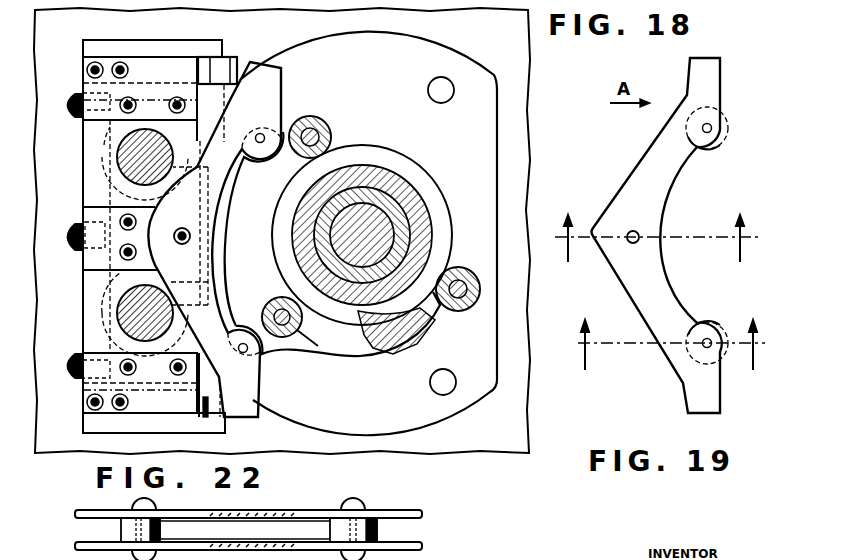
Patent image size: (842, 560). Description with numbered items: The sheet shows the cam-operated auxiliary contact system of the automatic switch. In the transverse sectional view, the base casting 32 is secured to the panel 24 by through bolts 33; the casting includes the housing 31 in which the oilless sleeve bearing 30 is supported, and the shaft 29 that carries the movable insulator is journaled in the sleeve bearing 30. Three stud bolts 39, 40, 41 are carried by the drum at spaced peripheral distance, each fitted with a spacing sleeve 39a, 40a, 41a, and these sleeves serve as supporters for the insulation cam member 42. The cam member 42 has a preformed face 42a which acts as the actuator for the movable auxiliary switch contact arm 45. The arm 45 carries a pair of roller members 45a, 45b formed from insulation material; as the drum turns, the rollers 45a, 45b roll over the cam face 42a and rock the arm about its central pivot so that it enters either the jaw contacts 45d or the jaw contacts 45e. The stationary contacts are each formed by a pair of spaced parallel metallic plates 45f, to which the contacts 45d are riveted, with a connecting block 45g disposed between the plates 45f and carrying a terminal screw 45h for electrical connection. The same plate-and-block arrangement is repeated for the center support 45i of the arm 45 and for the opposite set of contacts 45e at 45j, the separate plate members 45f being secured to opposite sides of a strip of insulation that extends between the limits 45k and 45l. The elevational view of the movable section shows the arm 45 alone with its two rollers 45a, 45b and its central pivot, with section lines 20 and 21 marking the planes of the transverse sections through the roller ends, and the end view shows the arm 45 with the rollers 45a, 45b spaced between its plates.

In FIG. 18, the panel 24 is at (529, 418).
In FIG. 18, the shaft 29 is at (374, 225).
In FIG. 18, the sleeve bearing 30 is at (404, 200).
In FIG. 18, the housing 31 is at (386, 182).
In FIG. 18, the base casting 32 is at (478, 118).
In FIG. 18, the through bolts 33 is at (448, 84).
In FIG. 18, the stud bolt 39 is at (334, 137).
In FIG. 18, the spacing sleeve 39a is at (326, 124).
In FIG. 18, the stud bolt 40 is at (288, 338).
In FIG. 18, the spacing sleeve 40a is at (327, 354).
In FIG. 18, the stud bolt 41 is at (466, 311).
In FIG. 18, the spacing sleeve 41a is at (468, 262).
In FIG. 18, the cam member 42 is at (360, 350).
In FIG. 18, the cam face 42a is at (234, 182).
In FIG. 18, the movable auxiliary switch contact arm 45 is at (275, 90).
In FIG. 19, the movable auxiliary switch contact arm 45 is at (638, 182).
In FIG. 22, the movable auxiliary switch contact arm 45 is at (285, 532).
In FIG. 18, the roller member 45a is at (261, 138).
In FIG. 19, the roller member 45a is at (722, 144).
In FIG. 22, the roller member 45a is at (132, 530).
In FIG. 18, the roller member 45b is at (262, 366).
In FIG. 19, the roller member 45b is at (710, 322).
In FIG. 22, the roller member 45b is at (378, 518).
In FIG. 18, the jaw contacts 45d is at (222, 70).
In FIG. 18, the jaw contacts 45e is at (190, 243).
In FIG. 18, the metallic plates 45f is at (138, 68).
In FIG. 18, the connecting block 45g is at (88, 252).
In FIG. 18, the terminal screw 45h is at (68, 102).
In FIG. 18, the center support 45i is at (83, 222).
In FIG. 18, the opposite contact support 45j is at (68, 364).
In FIG. 18, the limit of insulation strip 45k is at (155, 97).
In FIG. 18, the limit of insulation strip 45l is at (150, 398).
In FIG. 19, the section line 20- 20 is at (668, 334).
In FIG. 19, the section line 21- 21 is at (658, 230).